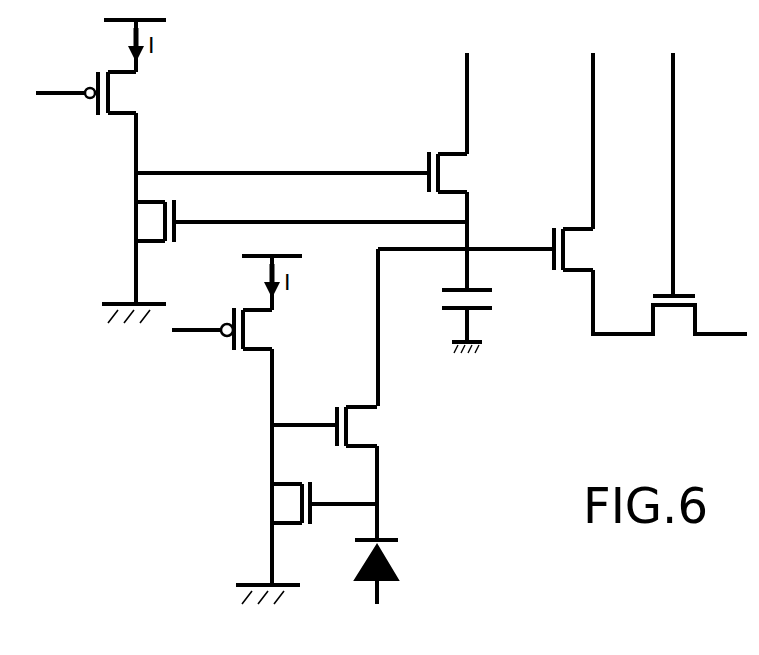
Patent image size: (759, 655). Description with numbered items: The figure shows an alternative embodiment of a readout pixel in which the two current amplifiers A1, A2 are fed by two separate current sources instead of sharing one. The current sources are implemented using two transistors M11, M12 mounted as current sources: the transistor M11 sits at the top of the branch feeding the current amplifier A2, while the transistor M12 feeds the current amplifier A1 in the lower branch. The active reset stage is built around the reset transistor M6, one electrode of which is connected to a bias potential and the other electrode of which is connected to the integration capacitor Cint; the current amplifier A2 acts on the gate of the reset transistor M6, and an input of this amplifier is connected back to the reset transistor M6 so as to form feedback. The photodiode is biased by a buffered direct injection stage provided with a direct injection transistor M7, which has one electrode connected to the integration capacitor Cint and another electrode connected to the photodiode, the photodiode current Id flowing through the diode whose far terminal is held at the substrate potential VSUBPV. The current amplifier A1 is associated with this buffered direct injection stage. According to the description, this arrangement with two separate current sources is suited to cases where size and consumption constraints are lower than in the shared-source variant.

The current source transistor M11 is at (140, 92).
The current amplifier A2 is at (120, 148).
The reset transistor M6 is at (470, 172).
The integration capacitor Cint is at (495, 300).
The current source transistor M12 is at (236, 360).
The current amplifier A1 is at (258, 462).
The direct injection transistor M7 is at (382, 420).
The photodiode current Id is at (364, 562).
The photodiode substrate voltage VSUBPV is at (435, 604).